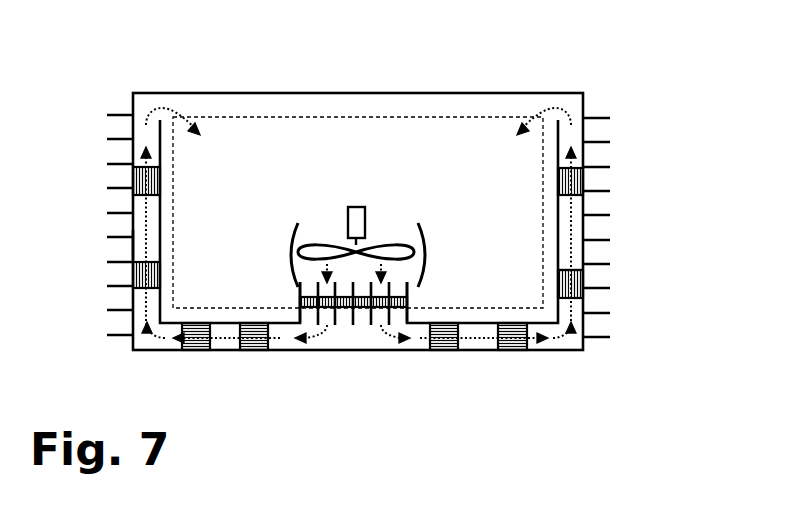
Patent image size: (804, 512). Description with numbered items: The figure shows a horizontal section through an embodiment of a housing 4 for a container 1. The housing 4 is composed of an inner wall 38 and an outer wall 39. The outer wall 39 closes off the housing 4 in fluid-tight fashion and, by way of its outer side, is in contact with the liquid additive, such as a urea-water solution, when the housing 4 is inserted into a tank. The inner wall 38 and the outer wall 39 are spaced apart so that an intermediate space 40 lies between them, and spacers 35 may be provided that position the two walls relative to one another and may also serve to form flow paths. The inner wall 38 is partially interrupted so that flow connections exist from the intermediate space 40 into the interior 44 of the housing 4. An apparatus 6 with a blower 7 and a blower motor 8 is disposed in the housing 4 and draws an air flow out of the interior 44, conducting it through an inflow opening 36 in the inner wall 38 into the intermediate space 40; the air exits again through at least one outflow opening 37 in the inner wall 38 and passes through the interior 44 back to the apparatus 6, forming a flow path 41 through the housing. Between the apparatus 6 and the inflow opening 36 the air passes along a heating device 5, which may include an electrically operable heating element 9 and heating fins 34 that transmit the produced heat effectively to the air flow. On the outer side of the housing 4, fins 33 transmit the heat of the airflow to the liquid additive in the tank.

The container 1 is at (140, 66).
The housing 4 is at (583, 100).
The heating device 5 is at (408, 298).
The apparatus 6 is at (424, 237).
The blower 7 is at (384, 245).
The blower motor 8 is at (352, 207).
The electrically operable heating element 9 is at (322, 272).
The fins 33 is at (600, 130).
The heating fins 34 is at (393, 287).
The spacers 35 is at (573, 272).
The inflow opening 36 is at (298, 336).
The outflow opening 37 is at (163, 122).
The inner wall 38 is at (162, 230).
The outer wall 39 is at (133, 253).
The intermediate space 40 is at (153, 207).
The flow path 41 is at (567, 98).
The interior 44 is at (443, 117).